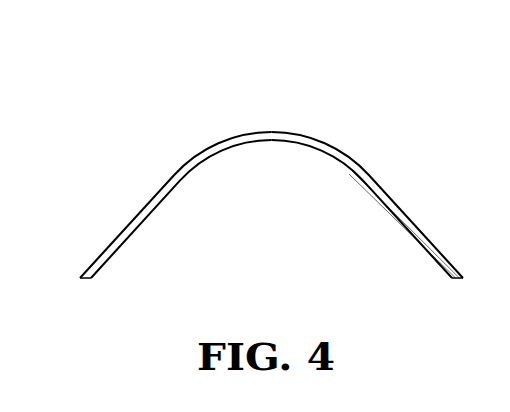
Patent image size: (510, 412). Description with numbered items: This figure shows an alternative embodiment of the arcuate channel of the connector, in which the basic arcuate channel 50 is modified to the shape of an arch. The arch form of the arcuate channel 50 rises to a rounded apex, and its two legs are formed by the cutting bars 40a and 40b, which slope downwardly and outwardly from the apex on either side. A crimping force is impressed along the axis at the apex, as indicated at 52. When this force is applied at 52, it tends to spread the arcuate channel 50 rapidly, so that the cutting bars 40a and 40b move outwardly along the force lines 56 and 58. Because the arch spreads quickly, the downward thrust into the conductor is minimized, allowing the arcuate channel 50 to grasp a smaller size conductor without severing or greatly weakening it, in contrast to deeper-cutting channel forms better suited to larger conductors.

The cutting bar 40a is at (118, 250).
The cutting bar 40b is at (434, 262).
The arcuate channel 50 is at (287, 160).
The crimping force axis 52 is at (270, 131).
The force line 56 is at (68, 268).
The force line 58 is at (475, 270).